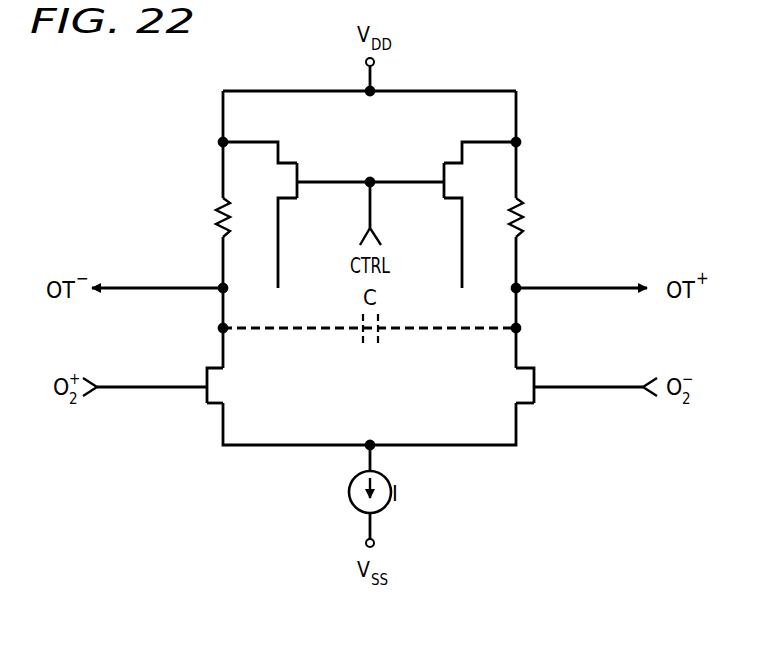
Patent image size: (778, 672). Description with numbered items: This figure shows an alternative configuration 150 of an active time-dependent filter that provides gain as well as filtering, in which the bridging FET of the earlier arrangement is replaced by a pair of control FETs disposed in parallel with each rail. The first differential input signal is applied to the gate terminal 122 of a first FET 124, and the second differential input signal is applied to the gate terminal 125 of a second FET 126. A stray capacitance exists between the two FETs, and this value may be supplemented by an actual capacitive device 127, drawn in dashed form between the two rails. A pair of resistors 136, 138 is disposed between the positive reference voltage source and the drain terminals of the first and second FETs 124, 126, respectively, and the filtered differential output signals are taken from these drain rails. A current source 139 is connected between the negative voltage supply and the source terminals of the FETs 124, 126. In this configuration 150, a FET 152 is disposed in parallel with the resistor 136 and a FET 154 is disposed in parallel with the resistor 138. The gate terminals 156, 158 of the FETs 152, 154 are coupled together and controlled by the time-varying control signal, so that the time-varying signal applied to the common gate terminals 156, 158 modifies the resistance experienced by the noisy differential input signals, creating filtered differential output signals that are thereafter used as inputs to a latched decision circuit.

The configuration 150 is at (624, 141).
The FET 152 is at (296, 163).
The gate terminal 156 is at (298, 199).
The gate terminal 158 is at (445, 163).
The FET 154 is at (443, 199).
The resistor 136 is at (215, 210).
The resistor 138 is at (525, 205).
The capacitive device 127 is at (362, 338).
The first FET 124 is at (208, 367).
The gate terminal 122 is at (206, 403).
The second FET 126 is at (534, 367).
The gate terminal 125 is at (536, 403).
The current source 139 is at (348, 491).